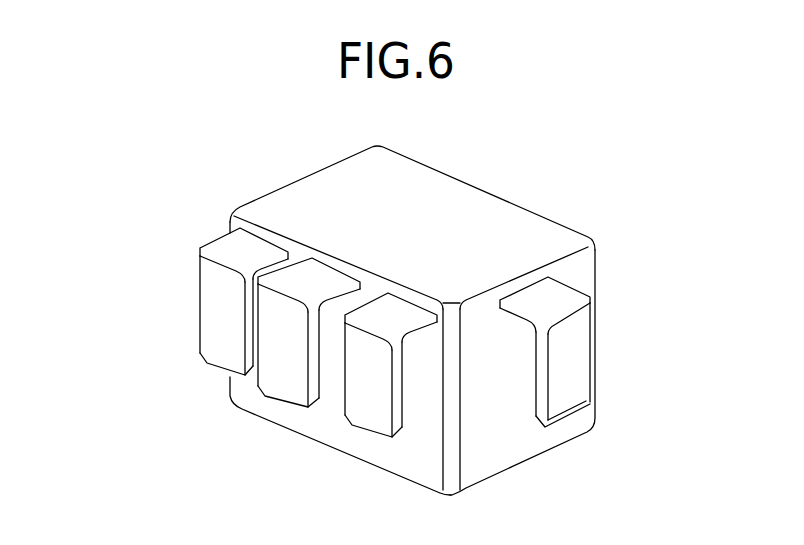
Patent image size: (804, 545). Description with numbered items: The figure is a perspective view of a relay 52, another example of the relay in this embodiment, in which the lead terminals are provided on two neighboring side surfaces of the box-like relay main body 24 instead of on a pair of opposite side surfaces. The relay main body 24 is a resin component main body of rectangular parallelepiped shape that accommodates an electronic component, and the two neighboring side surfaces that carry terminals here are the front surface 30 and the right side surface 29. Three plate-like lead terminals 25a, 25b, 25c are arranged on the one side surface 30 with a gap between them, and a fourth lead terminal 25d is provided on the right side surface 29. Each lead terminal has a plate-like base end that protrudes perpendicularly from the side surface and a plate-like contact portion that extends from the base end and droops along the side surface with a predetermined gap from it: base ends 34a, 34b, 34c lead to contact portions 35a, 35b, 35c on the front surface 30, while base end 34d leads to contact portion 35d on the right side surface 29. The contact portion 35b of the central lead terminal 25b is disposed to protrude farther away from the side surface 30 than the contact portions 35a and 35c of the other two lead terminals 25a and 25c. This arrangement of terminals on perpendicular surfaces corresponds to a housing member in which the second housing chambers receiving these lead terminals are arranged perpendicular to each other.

The relay 52 is at (497, 177).
The relay main body 24 is at (335, 191).
The right side surface 29 is at (503, 453).
The front surface 30 is at (402, 457).
The lead terminal 25a is at (90, 233).
The base end 34a is at (227, 245).
The contact portion 35a is at (215, 294).
The lead terminal 25b is at (90, 342).
The base end 34b is at (307, 282).
The contact portion 35b is at (280, 333).
The lead terminal 25c is at (90, 437).
The base end 34c is at (392, 307).
The contact portion 35c is at (367, 363).
The lead terminal 25d is at (700, 292).
The base end 34d is at (555, 292).
The contact portion 35d is at (575, 357).